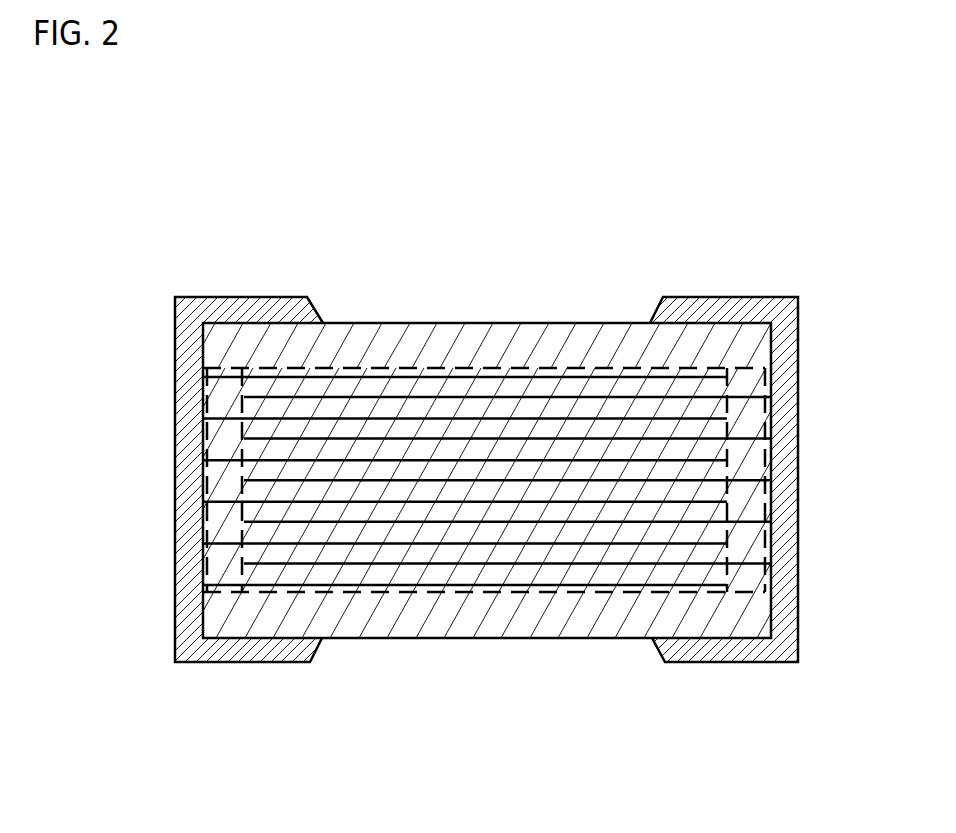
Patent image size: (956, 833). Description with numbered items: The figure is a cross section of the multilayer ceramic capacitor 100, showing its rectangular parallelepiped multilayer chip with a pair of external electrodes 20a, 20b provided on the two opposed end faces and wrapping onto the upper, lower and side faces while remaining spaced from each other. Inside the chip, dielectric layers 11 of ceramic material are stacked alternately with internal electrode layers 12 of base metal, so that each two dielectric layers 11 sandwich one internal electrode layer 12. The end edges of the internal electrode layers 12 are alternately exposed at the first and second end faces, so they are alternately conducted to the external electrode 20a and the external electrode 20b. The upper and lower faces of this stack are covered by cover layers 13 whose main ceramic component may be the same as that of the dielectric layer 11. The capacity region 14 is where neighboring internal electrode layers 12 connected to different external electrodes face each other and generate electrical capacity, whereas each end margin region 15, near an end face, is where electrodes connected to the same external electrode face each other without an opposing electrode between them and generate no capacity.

The multilayer ceramic capacitor 100 is at (700, 243).
The dielectric layer 11 is at (601, 550).
The internal electrode layer 12 is at (478, 525).
The cover layer 13 is at (385, 338).
The capacity region 14 is at (507, 367).
The end margin region 15 is at (225, 365).
The external electrode 20a is at (200, 298).
The external electrode 20b is at (762, 297).